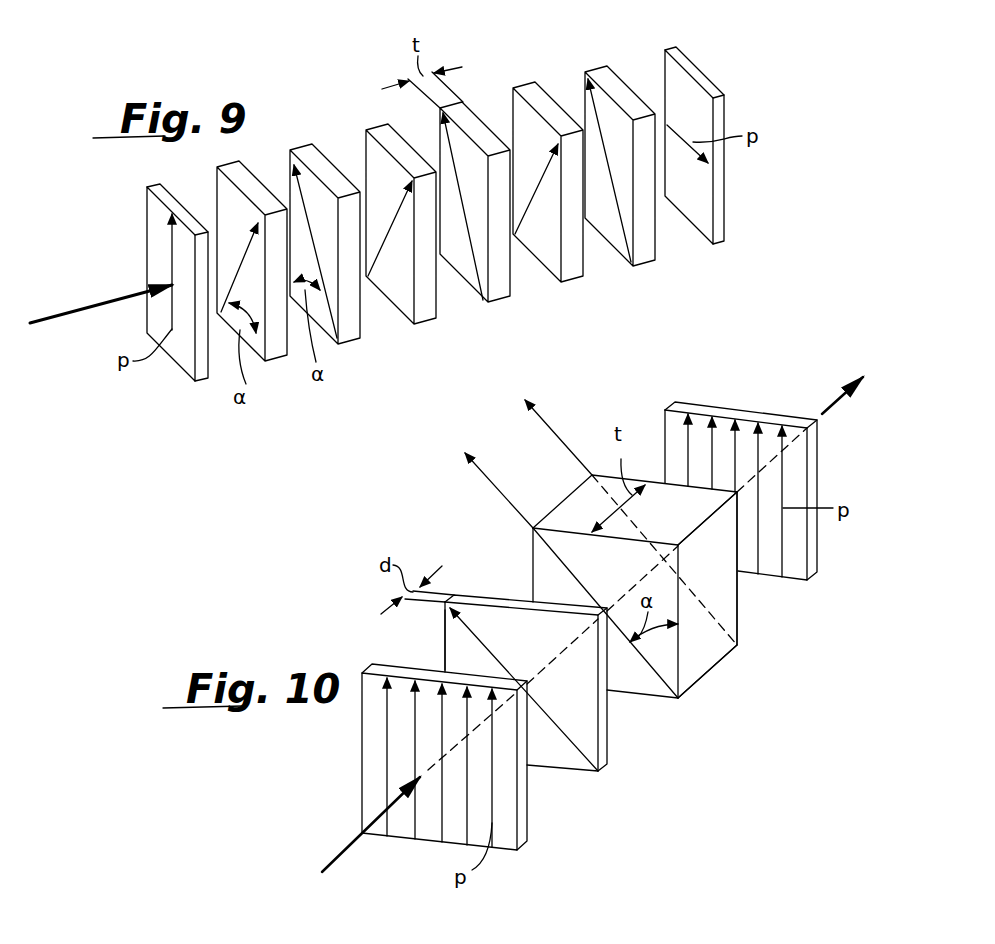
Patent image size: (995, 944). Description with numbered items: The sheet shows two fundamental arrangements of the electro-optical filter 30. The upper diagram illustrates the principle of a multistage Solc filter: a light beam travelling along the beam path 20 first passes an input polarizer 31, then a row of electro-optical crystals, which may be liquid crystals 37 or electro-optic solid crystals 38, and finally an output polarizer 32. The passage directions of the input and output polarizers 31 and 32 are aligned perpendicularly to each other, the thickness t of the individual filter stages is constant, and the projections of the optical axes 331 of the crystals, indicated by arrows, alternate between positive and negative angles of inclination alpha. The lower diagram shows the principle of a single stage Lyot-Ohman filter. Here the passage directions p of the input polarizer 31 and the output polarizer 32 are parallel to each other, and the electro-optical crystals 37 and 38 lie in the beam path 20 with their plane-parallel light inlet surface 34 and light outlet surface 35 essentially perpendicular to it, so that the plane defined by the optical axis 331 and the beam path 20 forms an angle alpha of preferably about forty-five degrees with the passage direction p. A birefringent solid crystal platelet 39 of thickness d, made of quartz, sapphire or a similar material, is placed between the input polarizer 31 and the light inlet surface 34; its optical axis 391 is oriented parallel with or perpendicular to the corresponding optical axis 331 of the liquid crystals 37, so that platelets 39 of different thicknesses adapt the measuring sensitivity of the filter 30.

In FIG. 9, the beam path 20 is at (75, 303).
In FIG. 10, the beam path 20 is at (338, 852).
In FIG. 9, the electro-optical filter 30 is at (315, 72).
In FIG. 10, the electro-optical filter 30 is at (407, 508).
In FIG. 9, the input polarizer 31 is at (187, 358).
In FIG. 10, the input polarizer 31 is at (368, 773).
In FIG. 9, the output polarizer 32 is at (720, 217).
In FIG. 10, the output polarizer 32 is at (795, 581).
In FIG. 10, the light inlet surface 34 is at (538, 567).
In FIG. 10, the light outlet surface 35 is at (740, 615).
In FIG. 10, the liquid crystals 37 is at (700, 662).
In FIG. 9, the electro-optic solid crystals 38 is at (274, 361).
In FIG. 10, the electro-optic solid crystals 38 is at (730, 684).
In FIG. 10, the birefringent solid crystal platelet 39 is at (604, 746).
In FIG. 9, the optical axis of the electro-optical crystals 331 is at (248, 232).
In FIG. 10, the optical axis of the electro-optical crystals 331 is at (558, 442).
In FIG. 10, the optical axis of the solid crystal platelet 391 is at (445, 643).